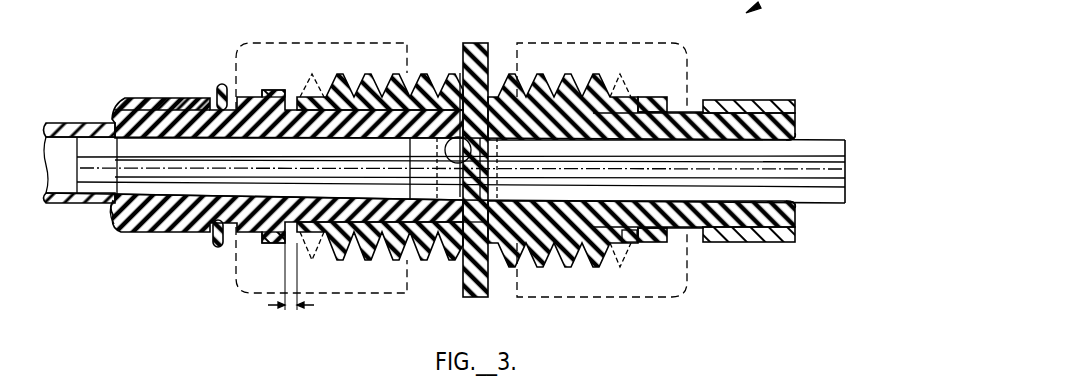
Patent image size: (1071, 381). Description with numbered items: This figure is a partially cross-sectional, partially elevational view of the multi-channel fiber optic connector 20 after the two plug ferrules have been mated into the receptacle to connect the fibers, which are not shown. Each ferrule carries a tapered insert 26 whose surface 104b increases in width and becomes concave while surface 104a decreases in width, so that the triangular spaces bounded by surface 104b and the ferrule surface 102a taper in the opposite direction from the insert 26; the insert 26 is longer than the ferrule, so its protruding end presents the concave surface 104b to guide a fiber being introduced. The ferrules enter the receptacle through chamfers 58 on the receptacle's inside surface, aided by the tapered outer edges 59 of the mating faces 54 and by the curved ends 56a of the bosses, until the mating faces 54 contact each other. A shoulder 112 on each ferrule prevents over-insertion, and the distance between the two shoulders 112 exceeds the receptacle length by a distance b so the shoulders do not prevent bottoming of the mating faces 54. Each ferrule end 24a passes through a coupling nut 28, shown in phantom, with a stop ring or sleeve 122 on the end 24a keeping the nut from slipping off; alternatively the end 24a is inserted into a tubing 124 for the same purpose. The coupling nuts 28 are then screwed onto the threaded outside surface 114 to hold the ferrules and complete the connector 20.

The multi-channel fiber optic connector 20 is at (768, 6).
The end of ferrule 24a is at (141, 118).
The insert 26 is at (847, 204).
The coupling nut 28 is at (235, 71).
The mating face 54 is at (460, 75).
The curved end of boss 56a is at (396, 232).
The chamfer 58 is at (285, 246).
The outer edge of mating face 59 is at (454, 240).
The surface of ferrule 102a is at (788, 140).
The surface of insert 104a is at (828, 173).
The surface of insert 104b is at (834, 150).
The shoulder 112 is at (260, 243).
The threaded outside surface 114 is at (566, 93).
The stop ring or sleeve 122 is at (216, 244).
The tubing 124 is at (113, 219).
The distance b is at (291, 312).